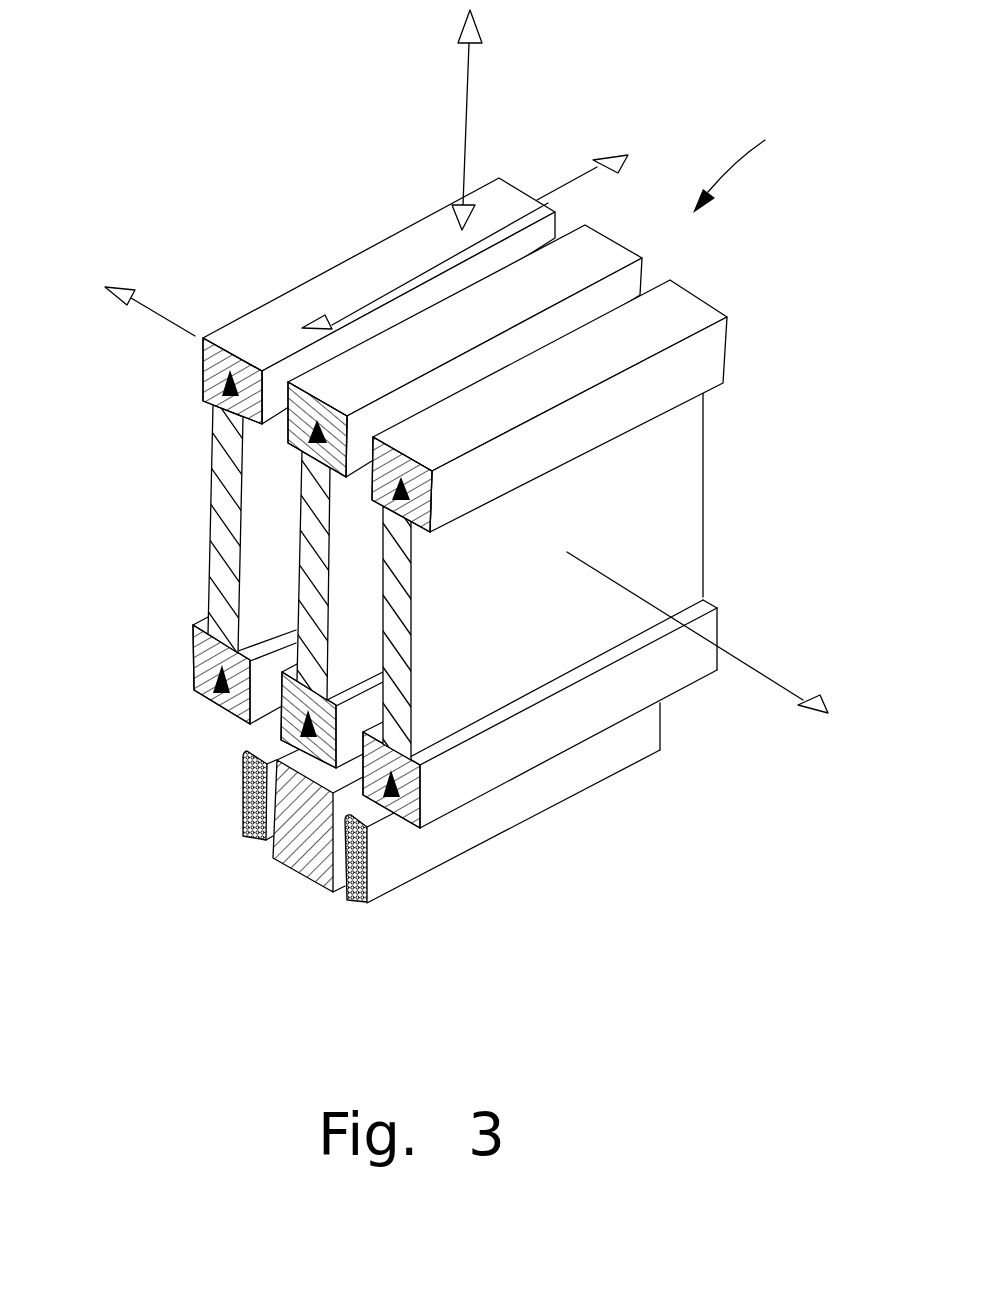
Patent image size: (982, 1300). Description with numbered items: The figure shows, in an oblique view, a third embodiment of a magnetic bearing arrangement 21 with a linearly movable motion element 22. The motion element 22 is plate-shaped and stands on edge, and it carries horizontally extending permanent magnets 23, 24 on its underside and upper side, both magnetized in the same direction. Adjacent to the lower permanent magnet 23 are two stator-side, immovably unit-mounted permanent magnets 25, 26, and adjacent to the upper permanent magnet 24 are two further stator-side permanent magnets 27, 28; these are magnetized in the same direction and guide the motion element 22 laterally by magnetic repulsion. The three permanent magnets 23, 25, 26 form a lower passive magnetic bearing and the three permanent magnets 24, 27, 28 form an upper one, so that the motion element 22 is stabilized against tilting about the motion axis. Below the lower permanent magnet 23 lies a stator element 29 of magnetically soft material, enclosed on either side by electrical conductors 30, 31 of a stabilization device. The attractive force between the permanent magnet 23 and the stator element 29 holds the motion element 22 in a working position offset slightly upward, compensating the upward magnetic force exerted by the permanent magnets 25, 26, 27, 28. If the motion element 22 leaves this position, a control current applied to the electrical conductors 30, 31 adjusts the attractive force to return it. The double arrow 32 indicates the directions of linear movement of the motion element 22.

The magnetic bearing arrangement 21 is at (745, 158).
The motion element 22 is at (313, 548).
The permanent magnet 23 is at (283, 739).
The permanent magnet 24 is at (593, 257).
The permanent magnet 25 is at (196, 678).
The permanent magnet 26 is at (300, 300).
The permanent magnet 27 is at (558, 728).
The permanent magnet 28 is at (672, 317).
The stator element 29 is at (287, 863).
The electrical conductor 30 is at (242, 820).
The electrical conductor 31 is at (472, 833).
The double arrow 32 is at (570, 182).